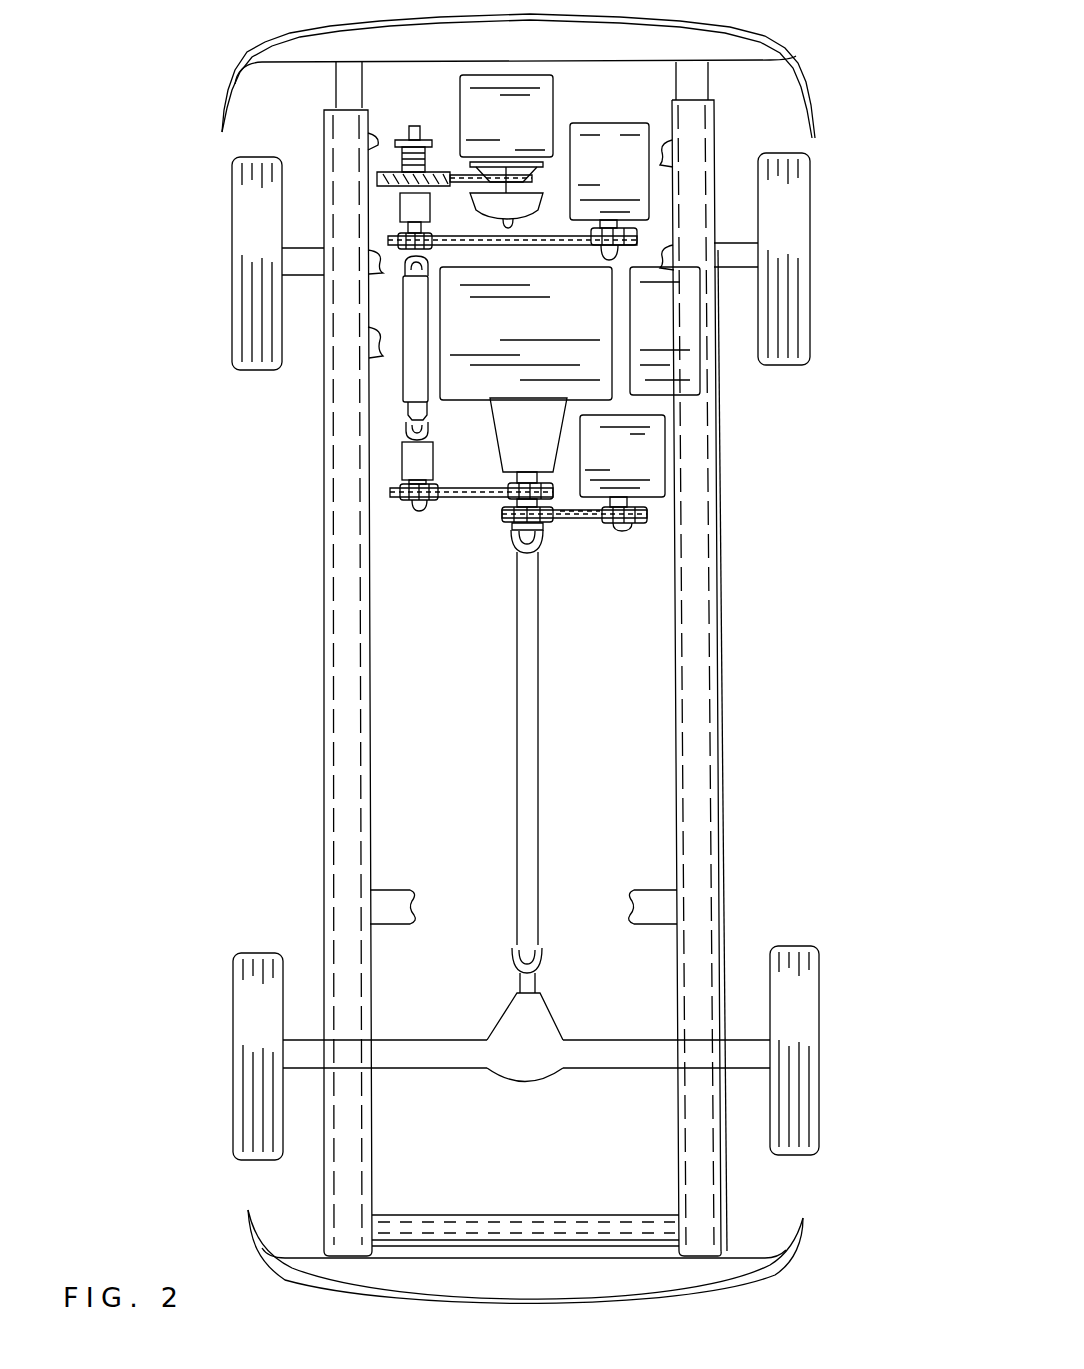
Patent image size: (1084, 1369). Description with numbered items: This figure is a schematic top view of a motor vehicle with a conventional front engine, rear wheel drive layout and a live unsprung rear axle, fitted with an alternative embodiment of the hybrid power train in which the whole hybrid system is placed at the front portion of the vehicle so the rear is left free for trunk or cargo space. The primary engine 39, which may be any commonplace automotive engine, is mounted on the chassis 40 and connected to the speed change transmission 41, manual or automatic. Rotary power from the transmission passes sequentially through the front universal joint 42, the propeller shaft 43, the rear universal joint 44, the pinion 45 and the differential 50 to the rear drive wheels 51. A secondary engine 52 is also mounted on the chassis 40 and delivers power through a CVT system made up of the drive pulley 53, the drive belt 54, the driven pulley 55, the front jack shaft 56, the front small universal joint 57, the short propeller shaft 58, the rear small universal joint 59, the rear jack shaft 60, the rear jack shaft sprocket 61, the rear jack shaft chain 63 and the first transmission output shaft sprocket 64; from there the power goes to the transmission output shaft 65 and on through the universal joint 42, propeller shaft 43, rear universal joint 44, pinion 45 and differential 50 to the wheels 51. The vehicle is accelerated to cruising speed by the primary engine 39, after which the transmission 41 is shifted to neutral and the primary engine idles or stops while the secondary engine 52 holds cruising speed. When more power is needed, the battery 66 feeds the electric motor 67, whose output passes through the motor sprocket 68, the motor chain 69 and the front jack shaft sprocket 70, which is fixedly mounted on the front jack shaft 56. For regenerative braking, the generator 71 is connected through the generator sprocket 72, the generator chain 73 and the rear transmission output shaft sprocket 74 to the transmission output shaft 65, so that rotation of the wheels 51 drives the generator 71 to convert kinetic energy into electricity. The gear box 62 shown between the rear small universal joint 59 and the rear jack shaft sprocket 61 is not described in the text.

The primary engine 39 is at (531, 336).
The chassis 40 is at (726, 658).
The speed change transmission 41 is at (541, 439).
The front universal joint 42 is at (545, 540).
The propeller shaft 43 is at (542, 708).
The rear universal joint 44 is at (545, 958).
The pinion 45 is at (540, 985).
The differential 50 is at (546, 1072).
The rear drive wheels 51 is at (235, 1040).
The secondary engine 52 is at (526, 130).
The drive pulley 53 is at (545, 200).
The drive belt 54 is at (466, 175).
The driven pulley 55 is at (387, 172).
The front jack shaft 56 is at (412, 128).
The front small universal joint 57 is at (405, 268).
The short propeller shaft 58 is at (400, 372).
The rear small universal joint 59 is at (405, 423).
The rear jack shaft 60 is at (413, 508).
The rear jack shaft sprocket 61 is at (402, 492).
The gear box 62 is at (402, 457).
The rear jack shaft chain 63 is at (470, 498).
The first transmission output shaft sprocket 64 is at (510, 488).
The transmission output shaft 65 is at (515, 530).
The battery 66 is at (670, 334).
The electric motor 67 is at (629, 168).
The motor sprocket 68 is at (633, 243).
The motor chain 69 is at (533, 247).
The front jack shaft sprocket 70 is at (400, 235).
The generator 71 is at (640, 472).
The generator sprocket 72 is at (637, 524).
The generator chain 73 is at (578, 514).
The rear transmission output shaft sprocket 74 is at (512, 520).